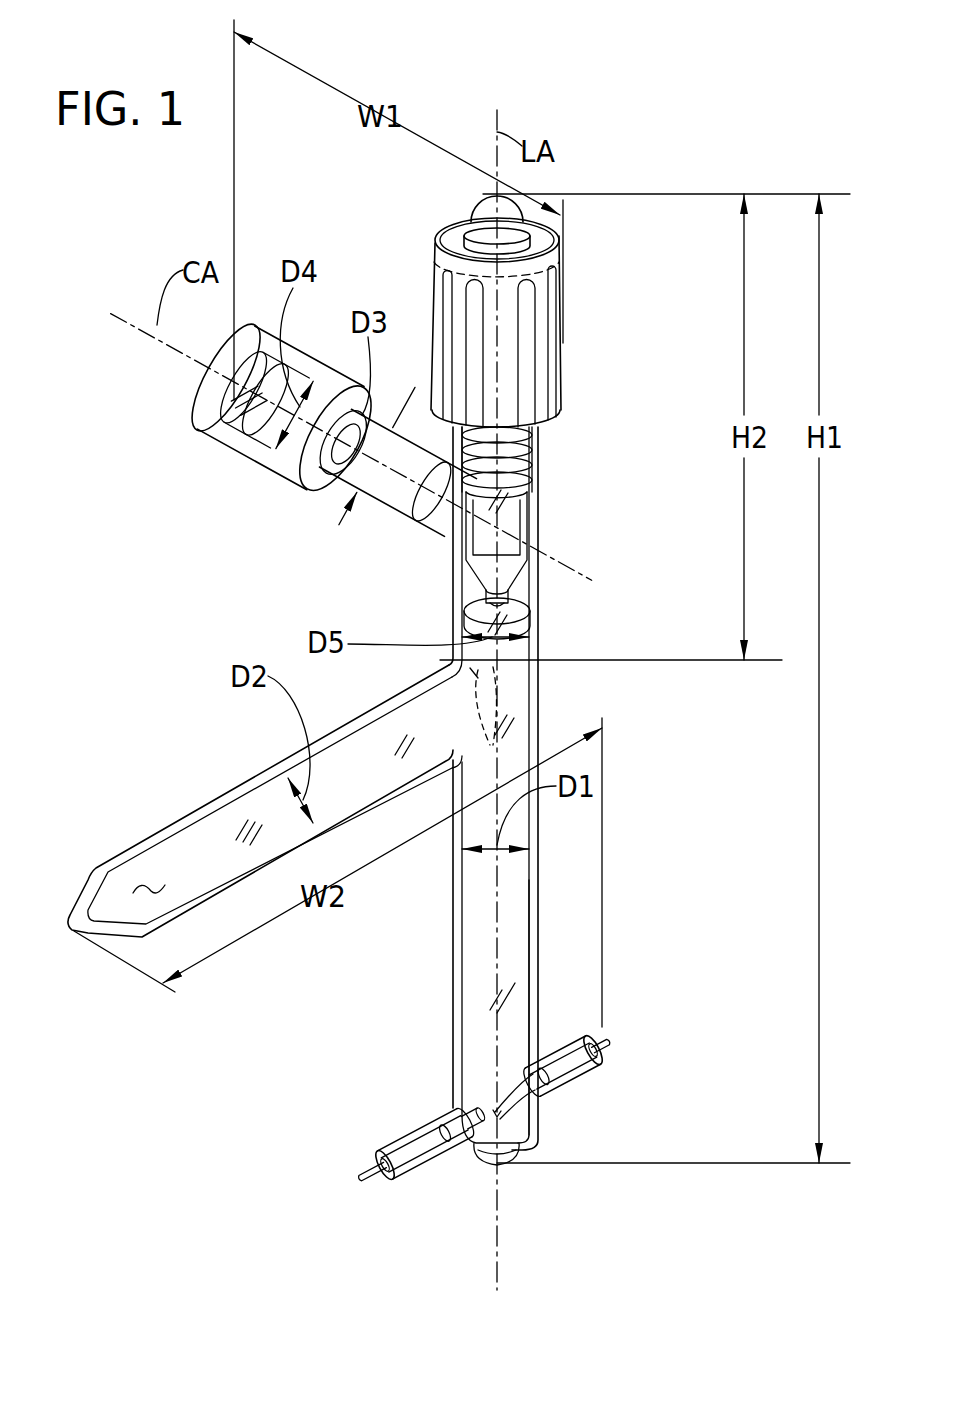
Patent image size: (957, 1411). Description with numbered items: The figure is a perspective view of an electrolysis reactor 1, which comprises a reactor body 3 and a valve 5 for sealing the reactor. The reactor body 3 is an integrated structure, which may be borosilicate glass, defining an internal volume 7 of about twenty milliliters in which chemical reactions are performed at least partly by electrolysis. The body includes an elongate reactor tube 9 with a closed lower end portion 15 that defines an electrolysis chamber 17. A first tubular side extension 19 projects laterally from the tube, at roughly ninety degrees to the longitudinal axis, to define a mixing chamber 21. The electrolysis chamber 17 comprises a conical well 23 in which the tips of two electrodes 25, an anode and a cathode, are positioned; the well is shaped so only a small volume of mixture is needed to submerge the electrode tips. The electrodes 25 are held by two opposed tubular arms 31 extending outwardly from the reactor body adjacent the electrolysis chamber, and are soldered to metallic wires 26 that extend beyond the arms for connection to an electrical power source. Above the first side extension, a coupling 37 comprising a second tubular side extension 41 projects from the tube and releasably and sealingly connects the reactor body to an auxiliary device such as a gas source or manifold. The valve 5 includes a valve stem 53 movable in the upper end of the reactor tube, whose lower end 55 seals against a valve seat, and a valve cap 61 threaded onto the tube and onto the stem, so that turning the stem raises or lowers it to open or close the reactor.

The electrolysis reactor 1 is at (636, 90).
The reactor body 3 is at (631, 812).
The valve 5 is at (631, 270).
The internal volume 7 is at (506, 920).
The elongate reactor tube 9 is at (541, 946).
The closed lower end portion 15 is at (478, 1149).
The electrolysis chamber 17 is at (512, 1060).
The first tubular side extension 19 is at (265, 772).
The mixing chamber 21 is at (140, 888).
The well 23 is at (520, 1148).
The electrodes 25 is at (490, 1116).
The metallic wires 26 is at (366, 1188).
The tubular arms 31 is at (438, 1118).
The coupling 37 is at (234, 488).
The second tubular side extension 41 is at (372, 500).
The valve stem 53 is at (500, 536).
The lower end 55 is at (508, 578).
The valve cap 61 is at (543, 363).